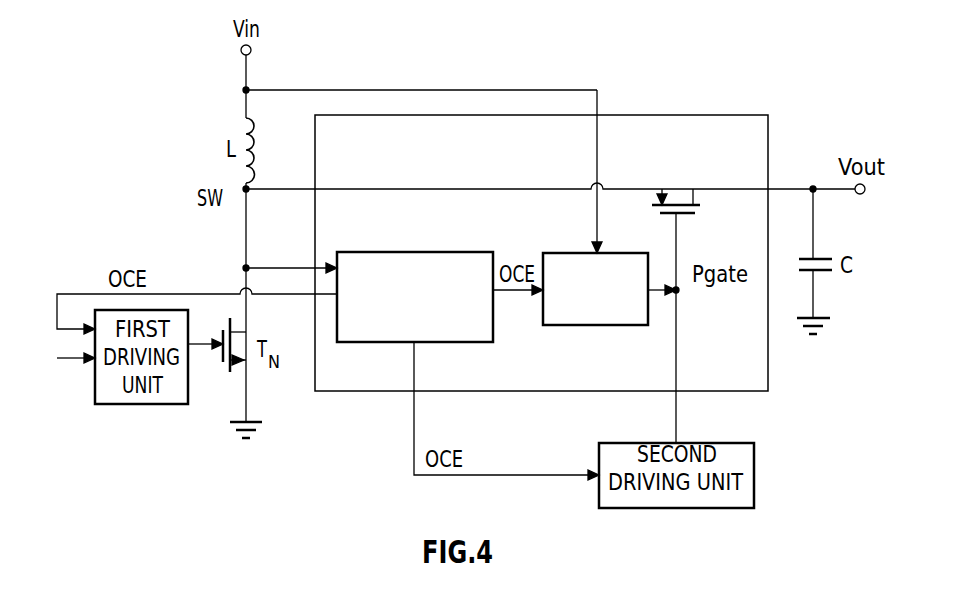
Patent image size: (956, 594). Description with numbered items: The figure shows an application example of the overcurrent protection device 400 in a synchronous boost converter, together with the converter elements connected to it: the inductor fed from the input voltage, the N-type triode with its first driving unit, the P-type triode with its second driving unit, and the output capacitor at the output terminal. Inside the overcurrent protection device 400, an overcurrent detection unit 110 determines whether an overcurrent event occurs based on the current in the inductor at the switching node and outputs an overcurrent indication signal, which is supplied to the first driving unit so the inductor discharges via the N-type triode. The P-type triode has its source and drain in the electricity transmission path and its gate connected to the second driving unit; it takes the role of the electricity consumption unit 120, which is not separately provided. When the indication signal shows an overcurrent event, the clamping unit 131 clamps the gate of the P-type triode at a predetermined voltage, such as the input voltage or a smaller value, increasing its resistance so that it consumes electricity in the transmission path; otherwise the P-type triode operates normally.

The overcurrent protection device 400 is at (688, 115).
The overcurrent detection unit 110 is at (437, 252).
The electricity consumption unit 120 is at (677, 192).
The clamping unit 131 is at (608, 325).